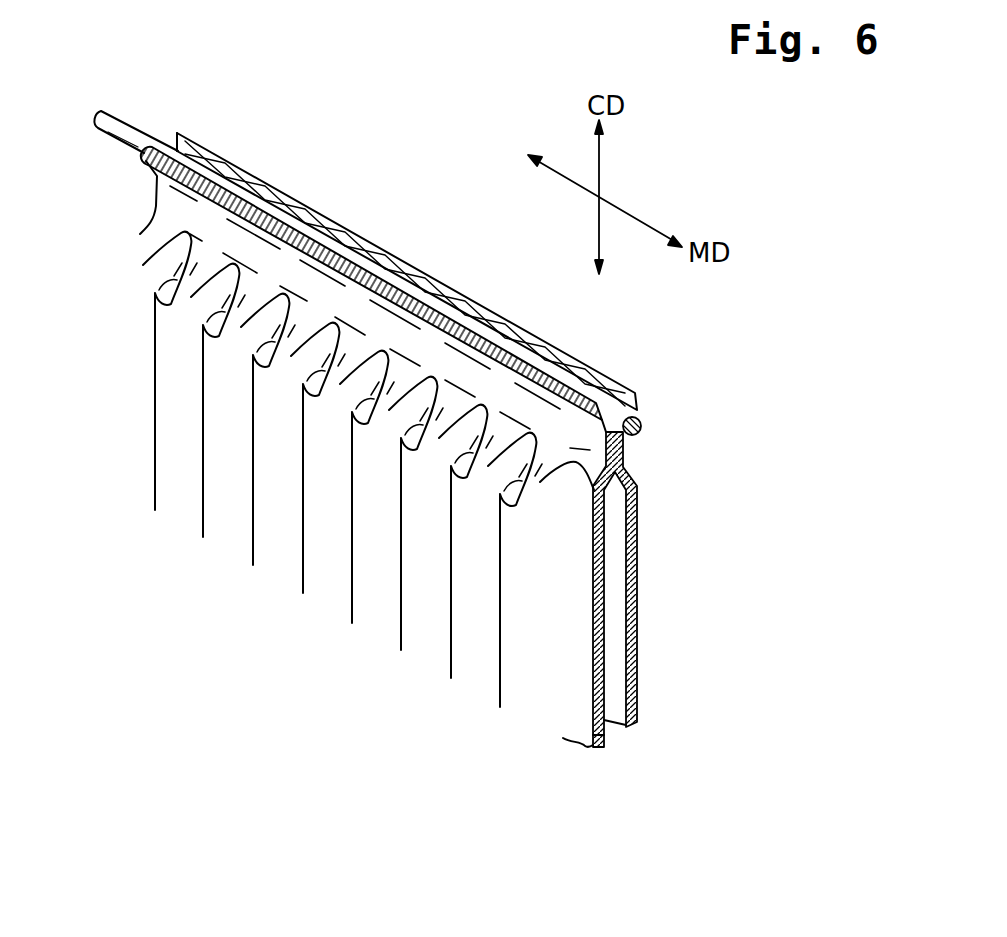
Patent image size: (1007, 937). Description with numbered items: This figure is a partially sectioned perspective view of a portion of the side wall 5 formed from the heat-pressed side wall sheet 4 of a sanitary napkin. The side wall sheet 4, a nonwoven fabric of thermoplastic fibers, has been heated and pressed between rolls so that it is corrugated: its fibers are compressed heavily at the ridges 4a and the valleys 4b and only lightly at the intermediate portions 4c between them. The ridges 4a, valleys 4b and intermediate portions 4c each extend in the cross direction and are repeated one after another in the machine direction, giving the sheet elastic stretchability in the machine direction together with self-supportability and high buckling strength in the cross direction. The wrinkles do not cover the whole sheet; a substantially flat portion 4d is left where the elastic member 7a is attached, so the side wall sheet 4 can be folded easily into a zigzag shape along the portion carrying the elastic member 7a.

The side wall sheet 4 is at (533, 680).
The ridges 4a is at (153, 453).
The valleys 4b is at (358, 388).
The intermediate portions 4c is at (253, 390).
The flat portions 4d is at (355, 227).
The side wall 5 is at (647, 472).
The elastic member 7a is at (643, 425).